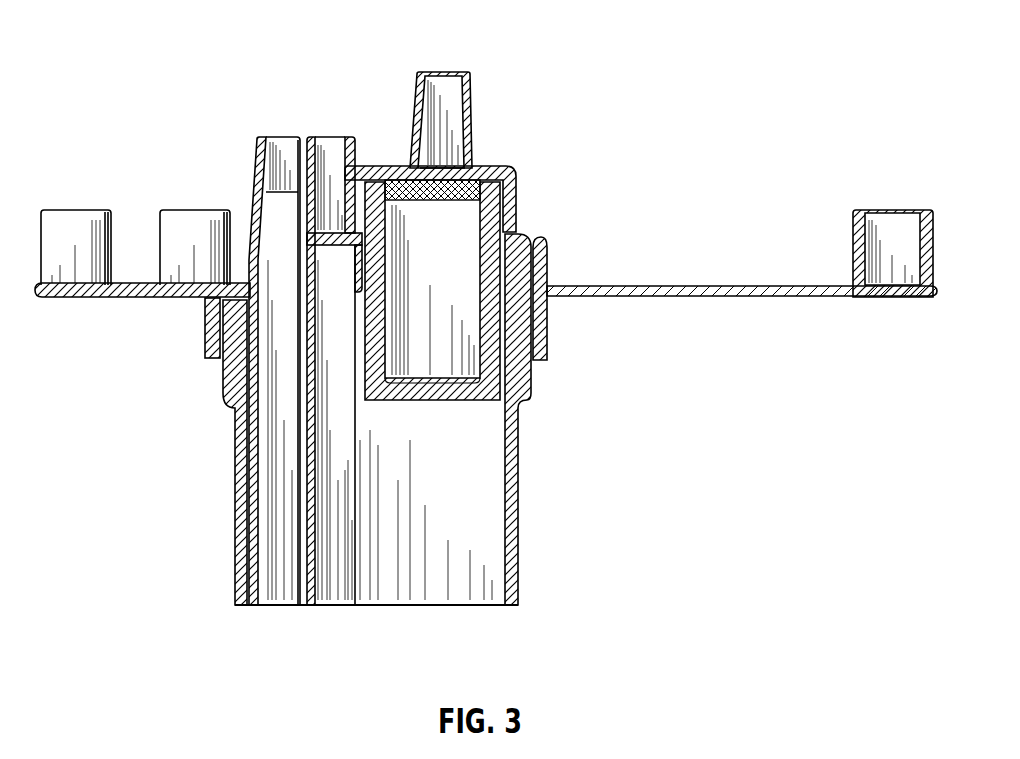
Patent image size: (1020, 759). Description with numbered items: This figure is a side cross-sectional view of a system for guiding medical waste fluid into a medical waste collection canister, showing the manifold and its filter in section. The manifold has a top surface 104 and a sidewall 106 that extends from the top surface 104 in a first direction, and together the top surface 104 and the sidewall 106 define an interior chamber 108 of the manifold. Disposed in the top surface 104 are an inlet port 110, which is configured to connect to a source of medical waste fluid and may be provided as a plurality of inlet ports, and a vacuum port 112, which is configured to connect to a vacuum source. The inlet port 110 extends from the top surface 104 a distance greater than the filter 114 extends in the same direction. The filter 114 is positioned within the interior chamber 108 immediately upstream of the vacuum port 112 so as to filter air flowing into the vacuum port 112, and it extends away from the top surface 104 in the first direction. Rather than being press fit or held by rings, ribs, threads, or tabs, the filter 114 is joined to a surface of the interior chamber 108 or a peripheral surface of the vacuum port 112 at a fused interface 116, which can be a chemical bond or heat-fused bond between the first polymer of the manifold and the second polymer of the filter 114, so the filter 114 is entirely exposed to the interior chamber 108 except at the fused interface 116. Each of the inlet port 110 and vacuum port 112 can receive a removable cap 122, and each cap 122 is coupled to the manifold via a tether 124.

The top surface 104 is at (512, 193).
The sidewall 106 is at (517, 475).
The interior chamber 108 is at (452, 573).
The inlet port 110 is at (283, 160).
The vacuum port 112 is at (440, 85).
The filter 114 is at (462, 250).
The fused interface 116 is at (467, 176).
The cap 122 is at (78, 209).
The tether 124 is at (727, 297).